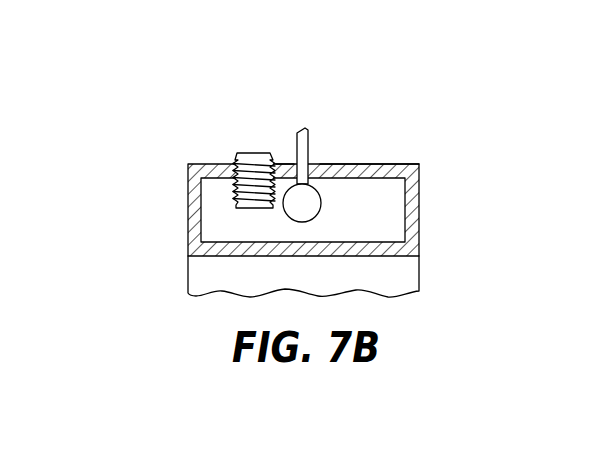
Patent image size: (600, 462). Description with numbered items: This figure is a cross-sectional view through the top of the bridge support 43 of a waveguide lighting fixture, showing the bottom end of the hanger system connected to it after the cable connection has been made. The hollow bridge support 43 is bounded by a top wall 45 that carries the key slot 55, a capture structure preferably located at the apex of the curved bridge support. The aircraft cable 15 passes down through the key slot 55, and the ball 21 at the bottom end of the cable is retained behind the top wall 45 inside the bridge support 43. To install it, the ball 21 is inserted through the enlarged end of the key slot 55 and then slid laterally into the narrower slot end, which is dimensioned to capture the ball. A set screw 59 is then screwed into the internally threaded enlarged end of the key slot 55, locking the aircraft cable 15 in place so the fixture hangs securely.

The aircraft cable 15 is at (301, 140).
The ball 21 is at (318, 200).
The bridge support 43 is at (188, 207).
The top wall 45 is at (382, 163).
The key slot 55 is at (280, 163).
The set screw 59 is at (245, 153).